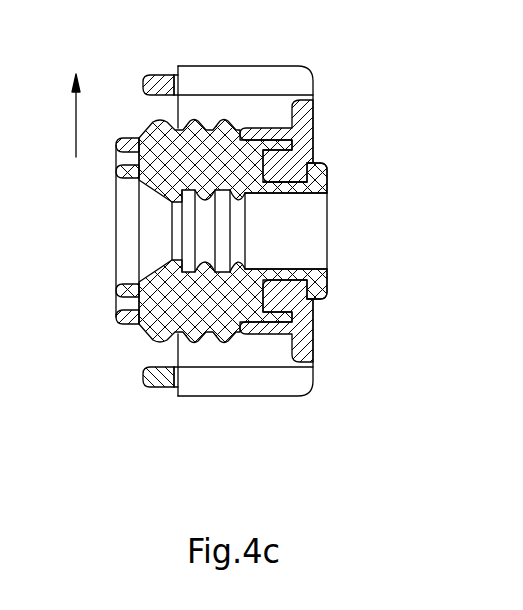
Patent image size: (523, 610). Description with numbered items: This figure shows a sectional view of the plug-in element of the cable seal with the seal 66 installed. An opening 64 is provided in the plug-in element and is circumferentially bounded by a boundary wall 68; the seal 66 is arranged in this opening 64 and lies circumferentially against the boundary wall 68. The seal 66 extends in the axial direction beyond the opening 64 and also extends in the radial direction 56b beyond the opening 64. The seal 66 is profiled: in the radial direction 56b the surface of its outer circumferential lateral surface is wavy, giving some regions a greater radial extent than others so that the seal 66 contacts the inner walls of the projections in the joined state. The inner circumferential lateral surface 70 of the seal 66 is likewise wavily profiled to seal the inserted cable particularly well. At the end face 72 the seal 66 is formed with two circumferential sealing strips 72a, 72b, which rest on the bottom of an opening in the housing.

The radial direction 56b is at (56, 115).
The opening 64 is at (285, 270).
The seal 66 is at (215, 306).
The boundary wall 68 is at (287, 298).
The inner circumferential lateral surface 70 is at (268, 195).
The end face 72 is at (116, 217).
The sealing strip 72a is at (116, 290).
The sealing strip 72b is at (116, 315).